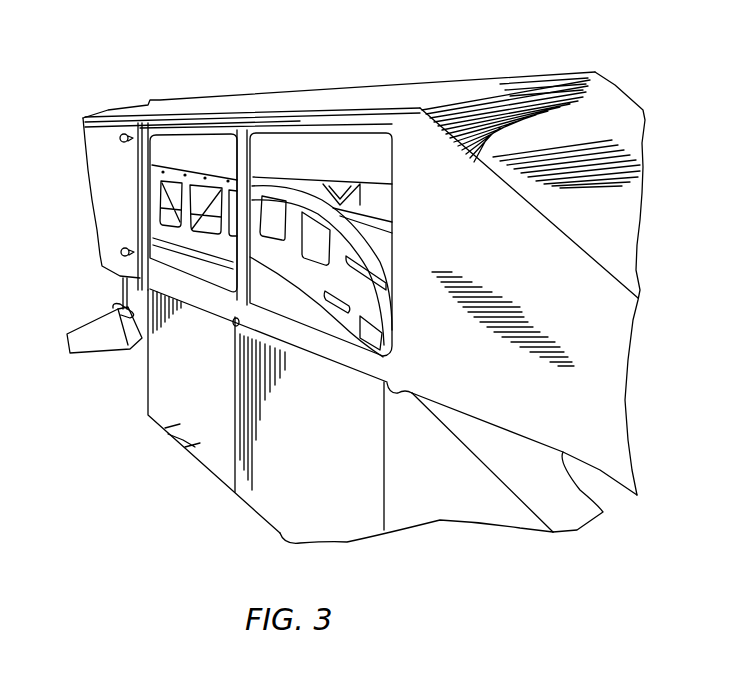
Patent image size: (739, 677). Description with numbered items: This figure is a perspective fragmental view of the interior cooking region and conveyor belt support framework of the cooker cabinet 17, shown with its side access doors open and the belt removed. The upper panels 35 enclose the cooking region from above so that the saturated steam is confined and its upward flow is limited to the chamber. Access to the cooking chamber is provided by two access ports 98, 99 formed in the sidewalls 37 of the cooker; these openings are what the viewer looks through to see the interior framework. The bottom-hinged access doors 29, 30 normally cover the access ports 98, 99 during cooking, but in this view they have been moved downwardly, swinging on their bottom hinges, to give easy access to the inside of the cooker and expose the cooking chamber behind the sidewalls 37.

The cooker cabinet 17 is at (623, 82).
The upper panels 35 is at (327, 92).
The sidewalls 37 is at (393, 125).
The access port 98 is at (171, 142).
The access port 99 is at (278, 147).
The access door 29 is at (145, 396).
The access door 30 is at (280, 514).